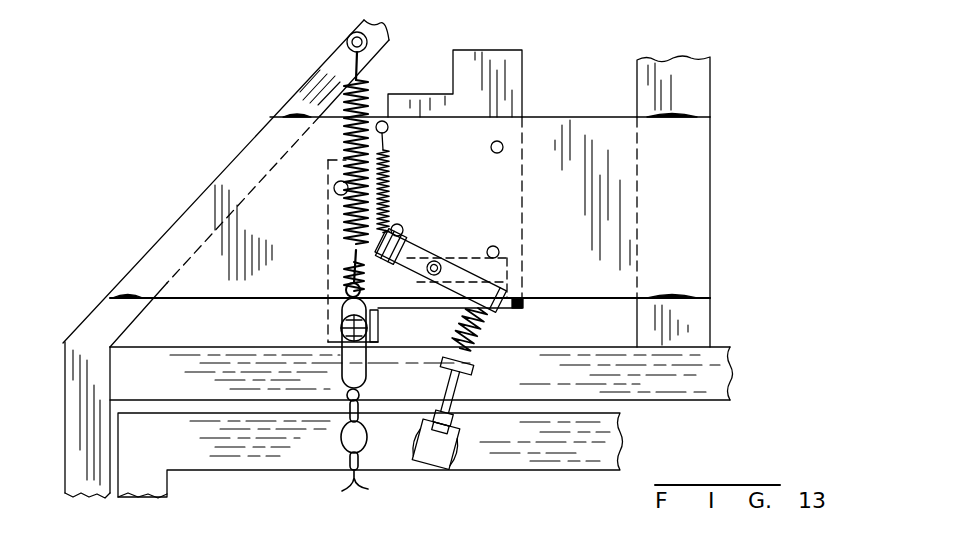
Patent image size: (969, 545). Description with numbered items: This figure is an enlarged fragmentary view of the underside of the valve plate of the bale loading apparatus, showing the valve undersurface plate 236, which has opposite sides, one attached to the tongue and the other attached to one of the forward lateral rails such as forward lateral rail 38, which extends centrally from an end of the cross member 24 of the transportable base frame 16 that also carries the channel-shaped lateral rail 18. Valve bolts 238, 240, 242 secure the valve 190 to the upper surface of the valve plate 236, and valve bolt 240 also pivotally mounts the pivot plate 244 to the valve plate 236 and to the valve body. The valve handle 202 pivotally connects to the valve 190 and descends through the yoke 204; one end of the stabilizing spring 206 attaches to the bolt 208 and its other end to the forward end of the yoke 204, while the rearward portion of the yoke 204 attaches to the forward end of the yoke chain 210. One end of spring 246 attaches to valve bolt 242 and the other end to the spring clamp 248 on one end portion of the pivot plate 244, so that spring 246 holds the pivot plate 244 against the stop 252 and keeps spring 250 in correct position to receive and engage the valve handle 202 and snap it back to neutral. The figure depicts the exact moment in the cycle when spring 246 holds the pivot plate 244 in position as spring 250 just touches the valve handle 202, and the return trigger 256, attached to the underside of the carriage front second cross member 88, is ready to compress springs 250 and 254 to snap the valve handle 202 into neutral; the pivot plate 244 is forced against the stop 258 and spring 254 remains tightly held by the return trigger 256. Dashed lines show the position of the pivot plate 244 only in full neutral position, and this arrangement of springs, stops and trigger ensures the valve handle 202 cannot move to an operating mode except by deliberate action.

The transportable base frame 16 is at (91, 262).
The lateral rail 18 is at (74, 413).
The cross member 24 is at (213, 360).
The forward lateral rail 38 is at (294, 101).
The second cross member 88 is at (188, 452).
The valve 190 is at (524, 66).
The valve handle 202 is at (340, 327).
The yoke 204 is at (370, 355).
The stabilizing spring 206 is at (340, 210).
The bolt 208 is at (348, 36).
The yoke chain 210 is at (370, 440).
The valve undersurface plate 236 is at (606, 173).
The valve bolt 238 is at (504, 146).
The valve bolt 240 is at (441, 262).
The valve bolt 242 is at (389, 128).
The pivot plate 244 is at (500, 293).
The spring 246 is at (388, 168).
The spring clamp 248 is at (403, 247).
The spring 250 is at (389, 296).
The stop 252 is at (401, 225).
The spring 254 is at (485, 332).
The return trigger 256 is at (472, 374).
The stop 258 is at (500, 250).